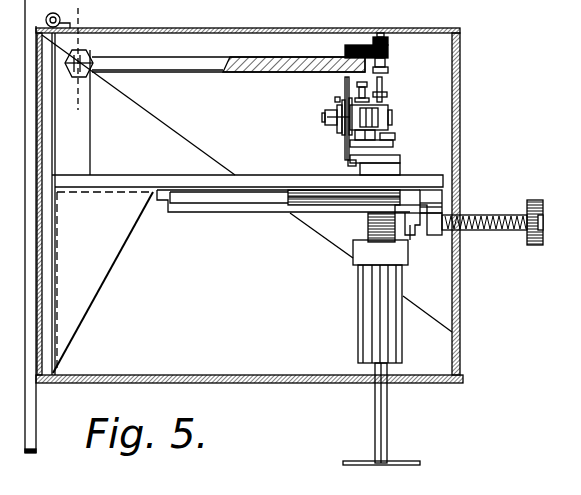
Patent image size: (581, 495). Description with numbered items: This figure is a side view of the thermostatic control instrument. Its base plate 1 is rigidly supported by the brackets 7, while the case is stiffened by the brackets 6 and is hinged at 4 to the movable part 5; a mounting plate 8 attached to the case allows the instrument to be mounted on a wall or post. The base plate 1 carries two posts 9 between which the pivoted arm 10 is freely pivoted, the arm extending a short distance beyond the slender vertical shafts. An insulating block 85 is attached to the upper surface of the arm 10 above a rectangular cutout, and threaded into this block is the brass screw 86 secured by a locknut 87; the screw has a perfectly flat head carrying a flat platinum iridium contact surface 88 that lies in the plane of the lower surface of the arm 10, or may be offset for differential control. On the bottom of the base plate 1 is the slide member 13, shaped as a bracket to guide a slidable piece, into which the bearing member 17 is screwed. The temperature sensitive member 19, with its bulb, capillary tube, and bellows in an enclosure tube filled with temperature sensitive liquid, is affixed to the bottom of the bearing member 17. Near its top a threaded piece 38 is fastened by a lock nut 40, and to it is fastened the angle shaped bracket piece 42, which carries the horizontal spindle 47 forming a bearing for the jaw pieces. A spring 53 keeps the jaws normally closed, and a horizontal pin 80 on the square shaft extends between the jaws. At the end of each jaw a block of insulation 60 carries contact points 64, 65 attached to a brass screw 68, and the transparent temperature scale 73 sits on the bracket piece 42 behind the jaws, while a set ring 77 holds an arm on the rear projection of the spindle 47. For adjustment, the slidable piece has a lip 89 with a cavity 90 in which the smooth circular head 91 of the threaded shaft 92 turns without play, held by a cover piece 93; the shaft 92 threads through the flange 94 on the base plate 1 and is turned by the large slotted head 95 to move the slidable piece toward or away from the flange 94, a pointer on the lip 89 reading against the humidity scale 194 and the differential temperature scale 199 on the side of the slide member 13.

The base plate 1 is at (232, 183).
The hinge 4 is at (59, 18).
The movable part 5 is at (130, 30).
The brackets 6 is at (48, 283).
The brackets 7 is at (88, 312).
The mounting plate 8 is at (35, 432).
The posts 9 is at (90, 152).
The pivoted arm 10 is at (142, 60).
The slide member 13 is at (196, 200).
The bearing member 17 is at (368, 223).
The temperature sensitive member 19 is at (352, 262).
The threaded piece 38 is at (350, 163).
The lock nut 40 is at (420, 163).
The angle shaped bracket piece 42 is at (355, 137).
The horizontal spindle 47 is at (325, 118).
The spring 53 is at (392, 117).
The block of insulation 60 is at (337, 103).
The contact point 64 is at (340, 116).
The contact point 65 is at (345, 157).
The brass screw 68 is at (357, 84).
The temperature scale 73 is at (348, 160).
The set ring 77 is at (341, 128).
The horizontal pin 80 is at (393, 143).
The insulating block 85 is at (390, 52).
The brass screw 86 is at (381, 37).
The locknut 87 is at (390, 40).
The contact surface 88 is at (388, 75).
The lip 89 is at (412, 228).
The cavity 90 is at (440, 208).
The circular head 91 is at (410, 240).
The threaded shaft 92 is at (500, 231).
The cover piece 93 is at (405, 193).
The flange 94 is at (440, 232).
The slotted head 95 is at (543, 205).
The humidity scale 194 is at (295, 205).
The differential temperature scale 199 is at (288, 197).